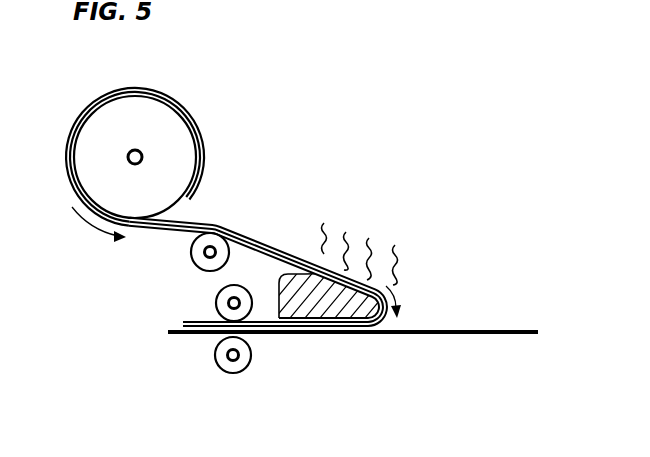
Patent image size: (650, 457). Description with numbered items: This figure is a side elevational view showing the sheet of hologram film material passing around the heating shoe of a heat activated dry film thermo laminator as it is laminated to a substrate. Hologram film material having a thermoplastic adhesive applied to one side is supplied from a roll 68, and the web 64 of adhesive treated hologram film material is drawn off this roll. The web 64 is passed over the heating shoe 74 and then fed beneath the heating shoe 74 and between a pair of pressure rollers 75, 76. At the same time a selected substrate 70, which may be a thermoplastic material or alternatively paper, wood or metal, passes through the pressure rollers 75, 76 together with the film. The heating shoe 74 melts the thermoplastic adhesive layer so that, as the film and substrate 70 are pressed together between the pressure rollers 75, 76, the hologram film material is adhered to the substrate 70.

The roll 68 is at (92, 164).
The web 64 is at (268, 262).
The pressure roller 75 is at (216, 303).
The pressure roller 76 is at (216, 361).
The heating shoe 74 is at (308, 313).
The substrate 70 is at (450, 334).